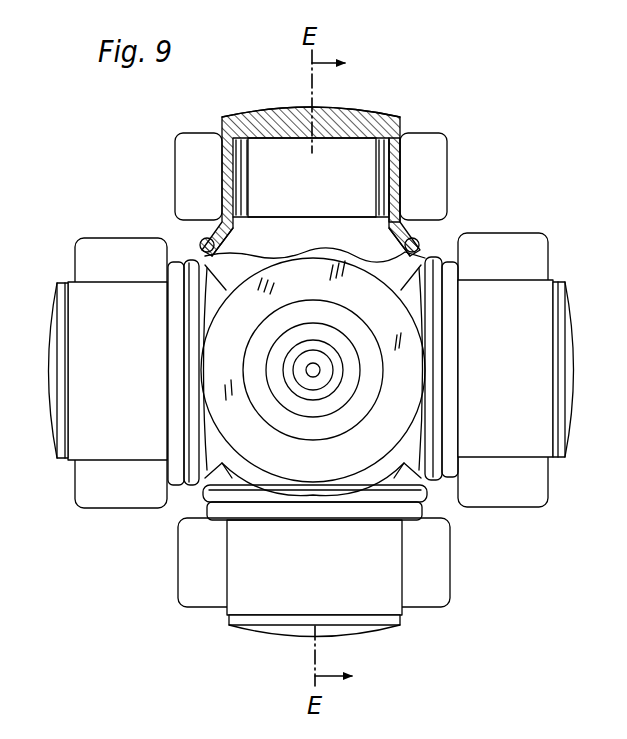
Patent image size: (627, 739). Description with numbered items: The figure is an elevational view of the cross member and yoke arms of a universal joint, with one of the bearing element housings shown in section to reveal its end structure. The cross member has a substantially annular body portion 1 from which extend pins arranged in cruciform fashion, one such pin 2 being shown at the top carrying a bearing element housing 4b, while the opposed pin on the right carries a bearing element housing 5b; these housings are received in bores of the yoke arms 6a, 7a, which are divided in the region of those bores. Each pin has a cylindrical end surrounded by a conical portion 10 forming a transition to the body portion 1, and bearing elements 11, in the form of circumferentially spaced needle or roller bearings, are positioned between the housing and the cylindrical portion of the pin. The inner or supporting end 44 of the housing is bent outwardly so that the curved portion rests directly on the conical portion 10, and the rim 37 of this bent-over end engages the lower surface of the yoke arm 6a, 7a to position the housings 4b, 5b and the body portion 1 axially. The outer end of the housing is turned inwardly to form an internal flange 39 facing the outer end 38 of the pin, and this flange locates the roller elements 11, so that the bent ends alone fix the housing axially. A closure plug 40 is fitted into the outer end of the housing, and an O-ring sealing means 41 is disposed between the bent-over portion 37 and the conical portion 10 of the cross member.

The body portion 1 is at (217, 297).
The pin 2 is at (263, 153).
The bearing element housing 4b is at (393, 172).
The bearing element housing 5b is at (540, 347).
The yoke arm 6a is at (437, 150).
The yoke arm 7a is at (533, 250).
The conical portion 10 is at (203, 262).
The bearing elements 11 is at (240, 167).
The rim of bent-over end 37 is at (419, 248).
The outer end of pin 38 is at (335, 132).
The internal flange 39 is at (383, 120).
The closure plug 40 is at (292, 117).
The sealing means 41 is at (429, 250).
The inner end of bearing housing 44 is at (403, 239).